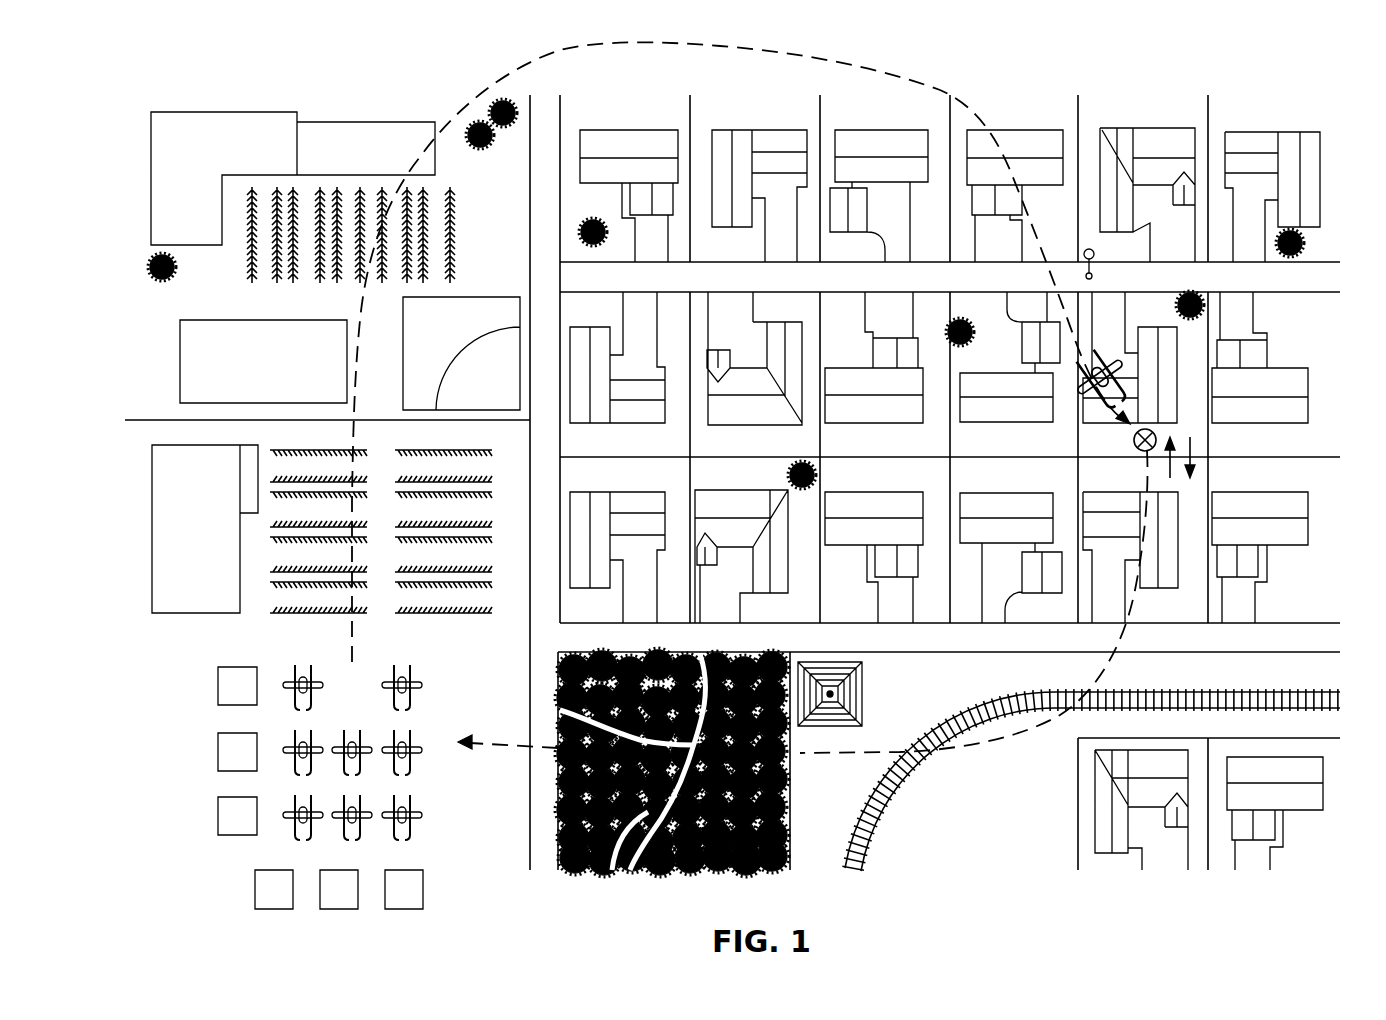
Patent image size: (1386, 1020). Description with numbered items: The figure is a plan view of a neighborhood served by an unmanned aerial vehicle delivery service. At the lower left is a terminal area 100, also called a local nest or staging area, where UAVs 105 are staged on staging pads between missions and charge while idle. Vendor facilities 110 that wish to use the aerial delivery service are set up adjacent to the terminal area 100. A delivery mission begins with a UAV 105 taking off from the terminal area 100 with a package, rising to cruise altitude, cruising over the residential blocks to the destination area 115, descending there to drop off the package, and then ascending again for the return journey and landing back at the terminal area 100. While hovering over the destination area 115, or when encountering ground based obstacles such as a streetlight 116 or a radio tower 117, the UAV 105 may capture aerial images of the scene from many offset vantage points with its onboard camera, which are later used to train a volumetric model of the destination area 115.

The terminal area 100 is at (194, 891).
The UAV 105 is at (420, 683).
The vendor facilities 110 is at (215, 748).
The destination area 115 is at (1136, 448).
The streetlight 116 is at (1076, 232).
The radio tower 117 is at (863, 693).